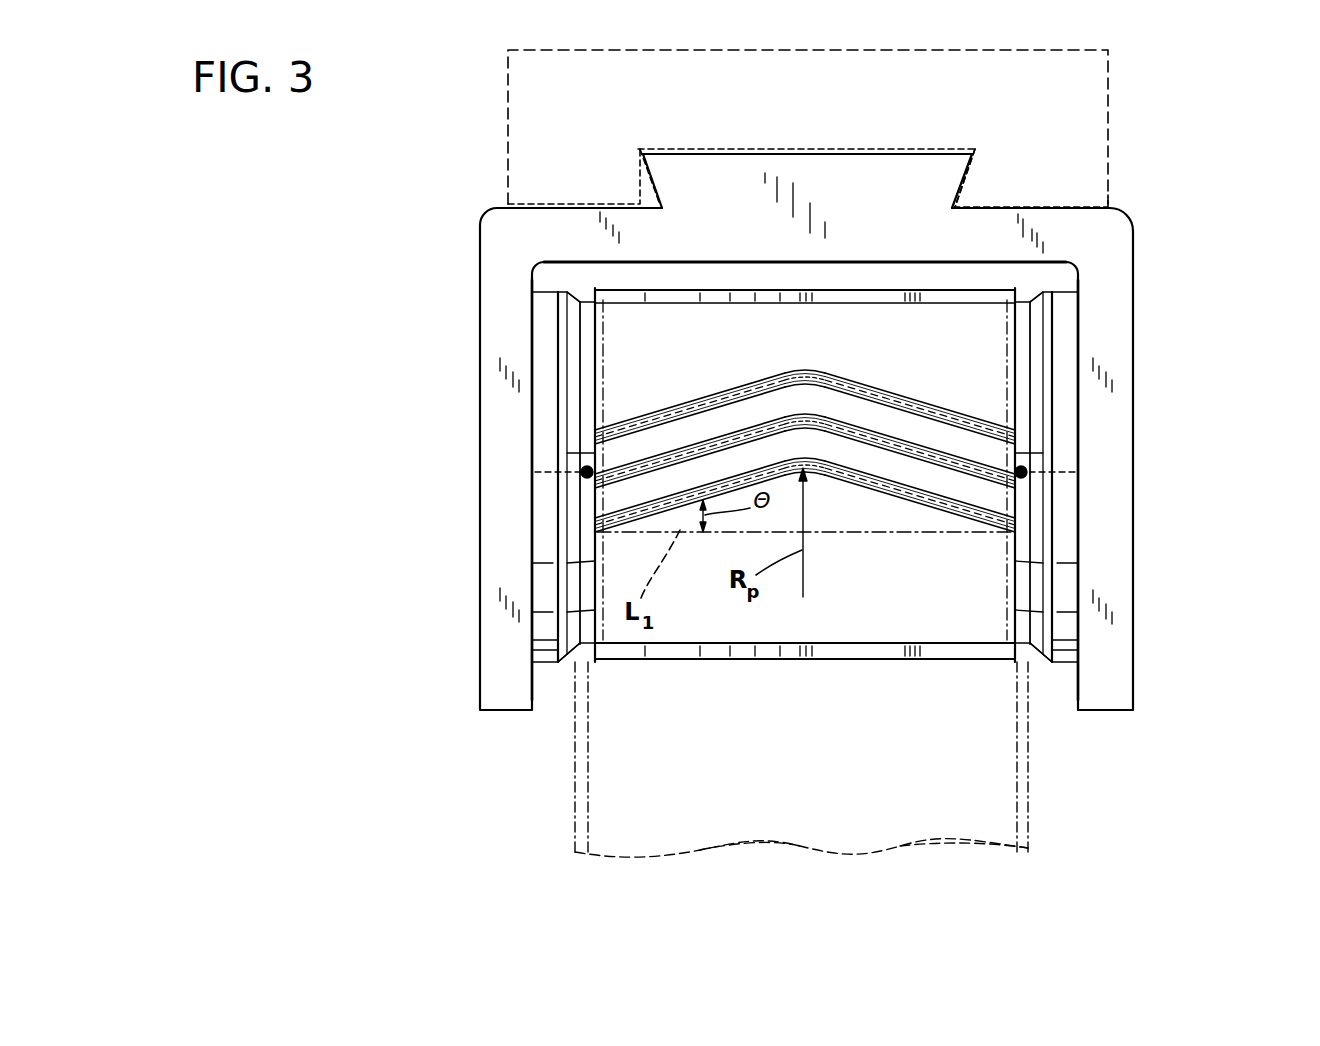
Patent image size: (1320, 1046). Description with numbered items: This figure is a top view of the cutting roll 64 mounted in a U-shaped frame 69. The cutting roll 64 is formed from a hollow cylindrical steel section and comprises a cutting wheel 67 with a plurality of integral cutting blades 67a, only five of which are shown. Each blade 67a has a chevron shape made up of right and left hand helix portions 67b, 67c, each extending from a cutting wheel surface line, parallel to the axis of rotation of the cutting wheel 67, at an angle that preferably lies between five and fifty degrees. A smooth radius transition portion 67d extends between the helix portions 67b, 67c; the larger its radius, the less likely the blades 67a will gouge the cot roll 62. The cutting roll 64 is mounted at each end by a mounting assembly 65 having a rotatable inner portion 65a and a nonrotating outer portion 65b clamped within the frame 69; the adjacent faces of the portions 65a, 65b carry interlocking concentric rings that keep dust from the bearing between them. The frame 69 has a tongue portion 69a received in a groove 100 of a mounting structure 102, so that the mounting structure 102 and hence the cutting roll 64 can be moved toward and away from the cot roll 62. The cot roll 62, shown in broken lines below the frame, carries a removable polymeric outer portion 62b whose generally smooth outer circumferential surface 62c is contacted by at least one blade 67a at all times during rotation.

The cot roll 62 is at (688, 822).
The removable outer portion 62b is at (835, 818).
The outer circumferential surface 62c is at (965, 808).
The cutting roll 64 is at (968, 615).
The mounting assembly 65 is at (560, 290).
The rotatable inner portion 65a is at (574, 661).
The nonrotating outer portion 65b is at (533, 652).
The cutting wheel 67 is at (890, 448).
The cutting blades 67a is at (868, 392).
The right hand helix portion 67b is at (952, 422).
The left hand helix portion 67c is at (718, 487).
The radius transition portion 67d is at (803, 368).
The U-shaped frame 69 is at (1110, 318).
The tongue portion 69a is at (872, 175).
The groove 100 is at (973, 178).
The mounting structure 102 is at (1107, 120).